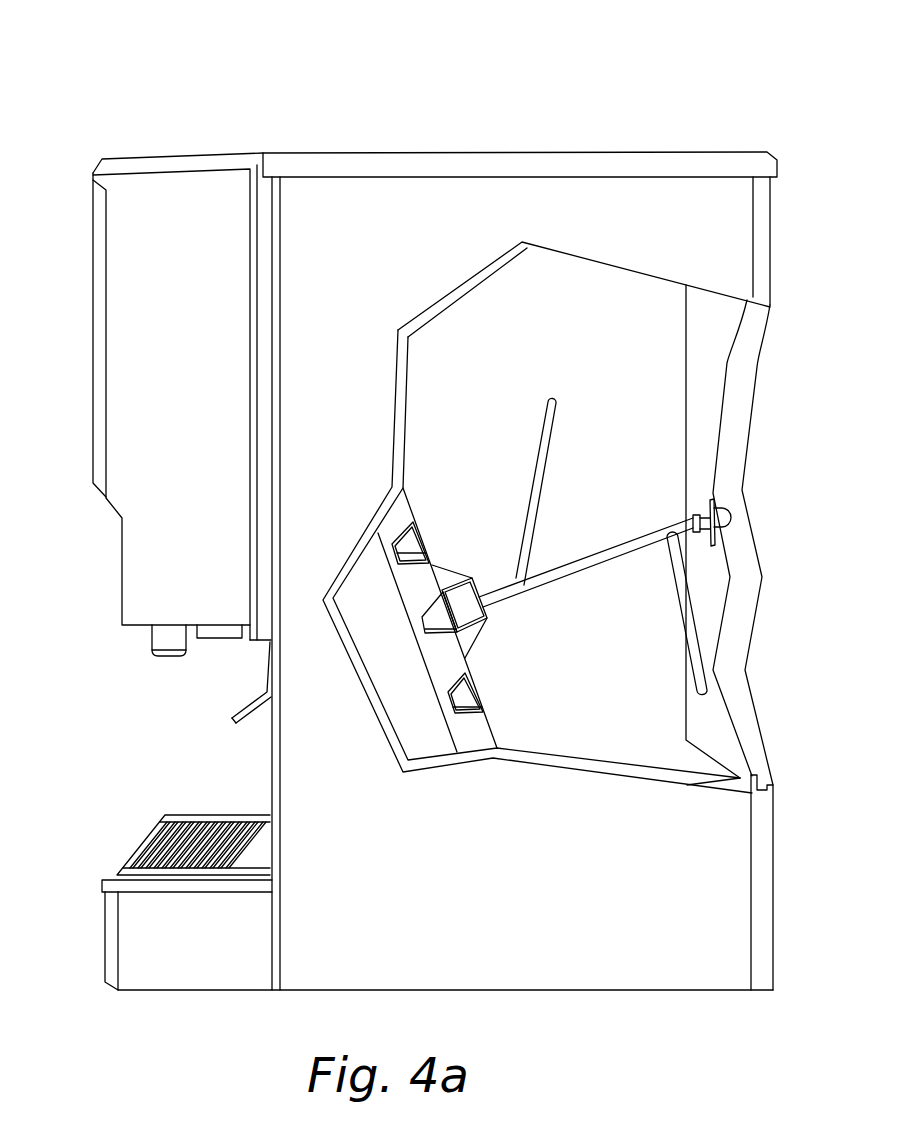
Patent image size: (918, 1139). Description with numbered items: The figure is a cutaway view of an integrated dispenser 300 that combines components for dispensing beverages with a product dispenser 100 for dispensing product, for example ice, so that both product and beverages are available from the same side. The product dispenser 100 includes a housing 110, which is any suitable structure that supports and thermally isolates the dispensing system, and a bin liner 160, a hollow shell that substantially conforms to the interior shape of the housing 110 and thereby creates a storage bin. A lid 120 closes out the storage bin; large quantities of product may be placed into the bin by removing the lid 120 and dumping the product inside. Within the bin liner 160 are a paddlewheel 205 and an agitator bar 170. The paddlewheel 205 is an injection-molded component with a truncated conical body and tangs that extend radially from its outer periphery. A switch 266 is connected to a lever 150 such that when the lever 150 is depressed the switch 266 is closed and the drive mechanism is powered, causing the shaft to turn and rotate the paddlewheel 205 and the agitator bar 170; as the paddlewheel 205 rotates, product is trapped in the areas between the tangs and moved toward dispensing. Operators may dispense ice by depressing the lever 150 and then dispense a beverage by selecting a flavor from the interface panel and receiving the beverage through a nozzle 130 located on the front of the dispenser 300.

The integrated dispenser 300 is at (190, 91).
The product dispenser 100 is at (285, 112).
The lid 120 is at (525, 152).
The housing 110 is at (483, 940).
The nozzle 130 is at (158, 642).
The switch 266 is at (245, 643).
The lever 150 is at (228, 715).
The bin liner 160 is at (613, 360).
The paddlewheel 205 is at (487, 720).
The agitator bar 170 is at (556, 585).